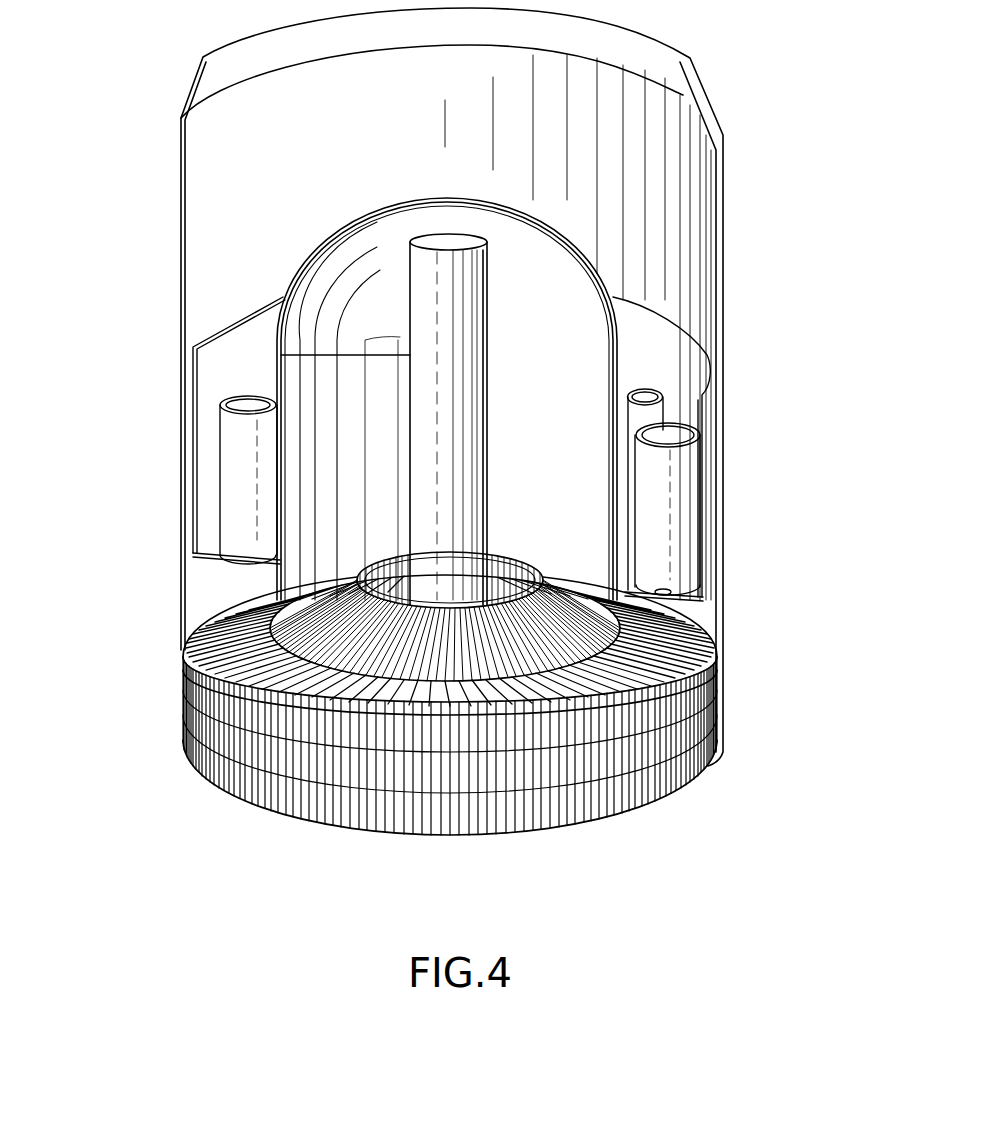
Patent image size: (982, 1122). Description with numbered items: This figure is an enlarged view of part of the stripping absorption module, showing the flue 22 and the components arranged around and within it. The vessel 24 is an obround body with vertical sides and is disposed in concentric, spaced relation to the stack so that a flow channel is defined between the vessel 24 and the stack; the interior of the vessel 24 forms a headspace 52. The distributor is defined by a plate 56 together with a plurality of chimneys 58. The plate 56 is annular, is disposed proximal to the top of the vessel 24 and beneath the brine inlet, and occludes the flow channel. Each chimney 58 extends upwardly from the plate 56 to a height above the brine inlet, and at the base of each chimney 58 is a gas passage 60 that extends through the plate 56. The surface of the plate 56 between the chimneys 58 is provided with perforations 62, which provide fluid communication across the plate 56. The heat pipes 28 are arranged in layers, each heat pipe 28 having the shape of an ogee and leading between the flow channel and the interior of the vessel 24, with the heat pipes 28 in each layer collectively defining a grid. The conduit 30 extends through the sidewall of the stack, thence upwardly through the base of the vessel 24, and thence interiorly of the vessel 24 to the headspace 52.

The flue 22 is at (183, 322).
The vessel 24 is at (540, 222).
The heat pipes 28 is at (527, 663).
The conduit 30 is at (410, 258).
The headspace 52 is at (411, 311).
The plate 56 is at (215, 548).
The chimneys 58 is at (243, 455).
The gas passage 60 is at (251, 398).
The perforations 62 is at (663, 574).